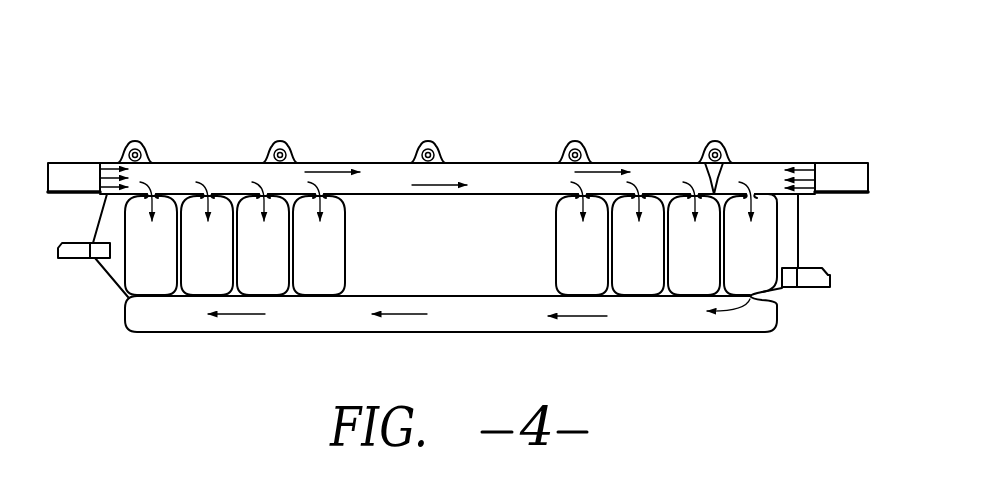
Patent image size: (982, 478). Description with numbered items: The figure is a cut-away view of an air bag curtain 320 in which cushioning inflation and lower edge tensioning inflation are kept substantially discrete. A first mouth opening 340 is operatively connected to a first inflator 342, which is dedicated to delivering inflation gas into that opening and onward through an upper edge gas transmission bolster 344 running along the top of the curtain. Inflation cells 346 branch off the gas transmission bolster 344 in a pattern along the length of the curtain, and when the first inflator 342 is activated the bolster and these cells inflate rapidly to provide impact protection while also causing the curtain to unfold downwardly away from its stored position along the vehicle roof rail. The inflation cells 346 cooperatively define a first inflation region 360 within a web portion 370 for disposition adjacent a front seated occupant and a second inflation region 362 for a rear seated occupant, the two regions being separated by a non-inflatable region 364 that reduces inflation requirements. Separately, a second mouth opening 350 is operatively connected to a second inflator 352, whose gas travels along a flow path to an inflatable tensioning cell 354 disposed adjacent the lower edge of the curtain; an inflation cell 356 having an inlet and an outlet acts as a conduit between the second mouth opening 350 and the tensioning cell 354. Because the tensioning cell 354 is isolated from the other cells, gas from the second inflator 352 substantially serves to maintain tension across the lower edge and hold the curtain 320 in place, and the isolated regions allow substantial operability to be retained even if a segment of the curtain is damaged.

The air bag curtain 320 is at (609, 110).
The first mouth opening 340 is at (106, 172).
The first inflator 342 is at (65, 170).
The upper edge gas transmission bolster 344 is at (480, 173).
The inflation cells 346 is at (132, 265).
The second mouth opening 350 is at (803, 165).
The second inflator 352 is at (847, 167).
The inflatable tensioning cell 354 is at (676, 334).
The inflation cell 356 is at (731, 265).
The first inflation region 360 is at (348, 232).
The second inflation region 362 is at (552, 238).
The non-inflatable region 364 is at (425, 264).
The web portion 370 is at (103, 278).